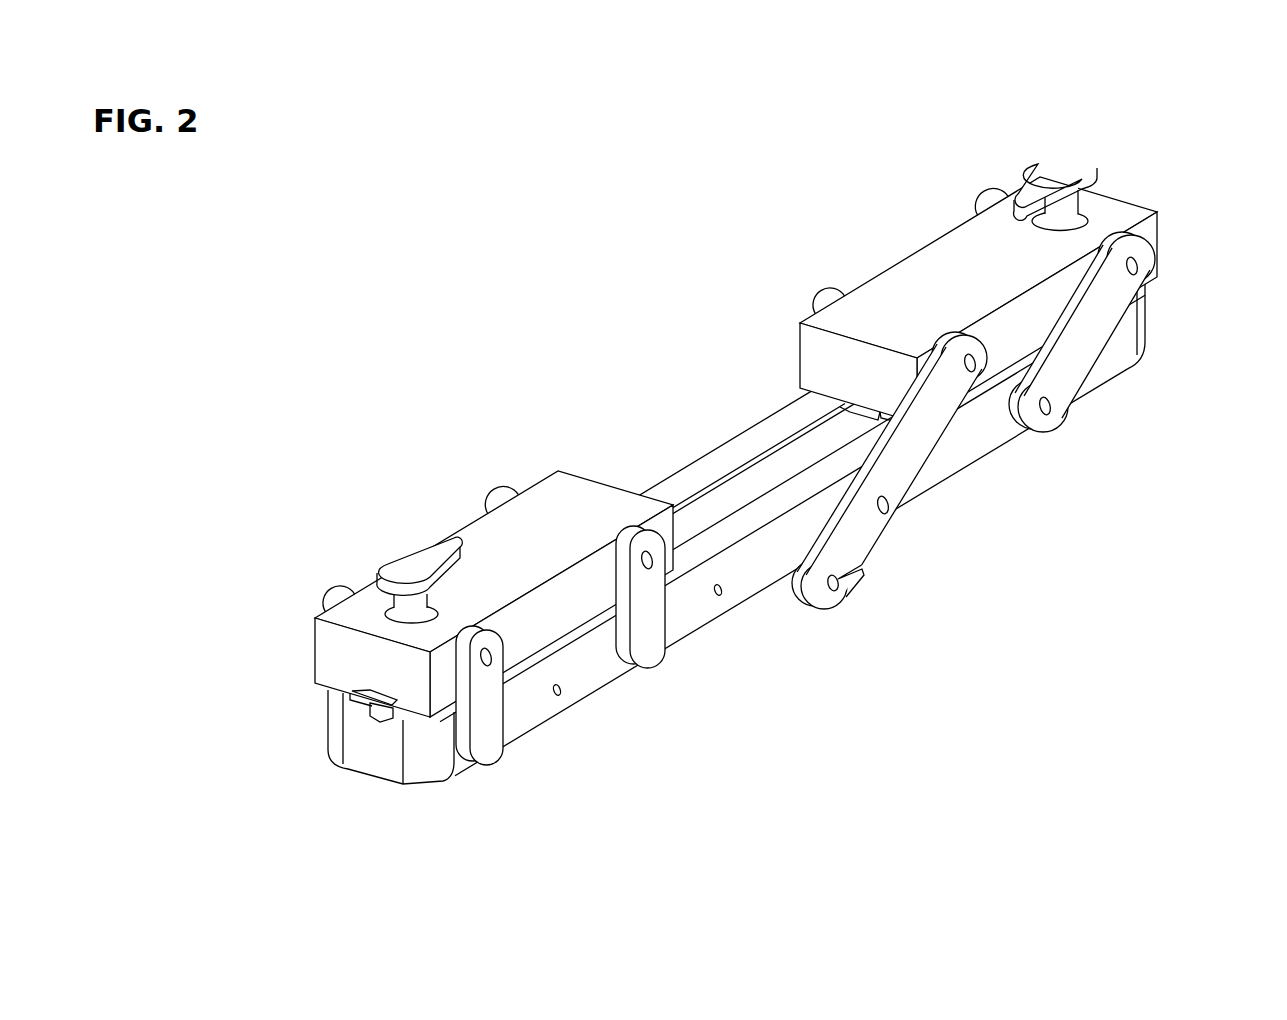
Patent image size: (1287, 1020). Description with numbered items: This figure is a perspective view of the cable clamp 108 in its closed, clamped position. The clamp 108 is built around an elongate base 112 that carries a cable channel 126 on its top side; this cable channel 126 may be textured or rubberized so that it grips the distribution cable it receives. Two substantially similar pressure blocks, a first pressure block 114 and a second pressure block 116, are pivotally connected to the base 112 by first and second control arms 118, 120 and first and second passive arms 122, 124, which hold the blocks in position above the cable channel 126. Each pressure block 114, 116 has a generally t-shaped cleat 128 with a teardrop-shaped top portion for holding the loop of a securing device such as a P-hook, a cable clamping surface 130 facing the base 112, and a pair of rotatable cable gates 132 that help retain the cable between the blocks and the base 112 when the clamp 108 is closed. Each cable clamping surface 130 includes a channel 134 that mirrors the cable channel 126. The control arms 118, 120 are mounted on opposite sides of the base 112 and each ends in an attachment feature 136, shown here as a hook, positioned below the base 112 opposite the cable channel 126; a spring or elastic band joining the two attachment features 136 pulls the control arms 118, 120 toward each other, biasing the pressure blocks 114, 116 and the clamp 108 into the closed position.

The clamp 108 is at (747, 451).
The elongate base 112 is at (748, 598).
The first pressure block 114 is at (492, 534).
The second pressure block 116 is at (934, 267).
The first control arm 118 is at (507, 493).
The second control arm 120 is at (937, 423).
The first passive arm 122 is at (340, 593).
The second passive arm 124 is at (1102, 320).
The cable channel 126 is at (727, 508).
The cleat 128 is at (405, 563).
The cable clamping surface 130 is at (360, 723).
The cable gate 132 is at (483, 743).
The channel 134 is at (348, 696).
The attachment feature 136 is at (810, 590).